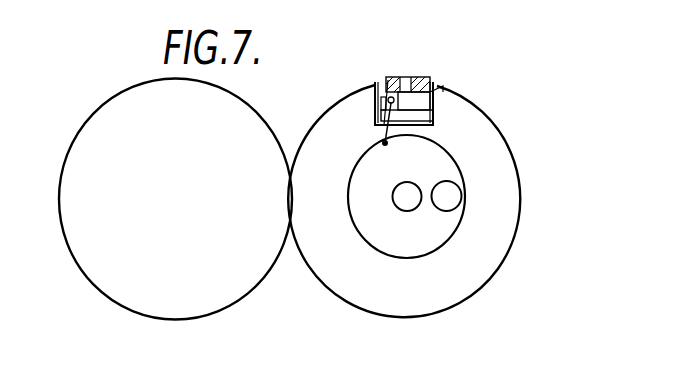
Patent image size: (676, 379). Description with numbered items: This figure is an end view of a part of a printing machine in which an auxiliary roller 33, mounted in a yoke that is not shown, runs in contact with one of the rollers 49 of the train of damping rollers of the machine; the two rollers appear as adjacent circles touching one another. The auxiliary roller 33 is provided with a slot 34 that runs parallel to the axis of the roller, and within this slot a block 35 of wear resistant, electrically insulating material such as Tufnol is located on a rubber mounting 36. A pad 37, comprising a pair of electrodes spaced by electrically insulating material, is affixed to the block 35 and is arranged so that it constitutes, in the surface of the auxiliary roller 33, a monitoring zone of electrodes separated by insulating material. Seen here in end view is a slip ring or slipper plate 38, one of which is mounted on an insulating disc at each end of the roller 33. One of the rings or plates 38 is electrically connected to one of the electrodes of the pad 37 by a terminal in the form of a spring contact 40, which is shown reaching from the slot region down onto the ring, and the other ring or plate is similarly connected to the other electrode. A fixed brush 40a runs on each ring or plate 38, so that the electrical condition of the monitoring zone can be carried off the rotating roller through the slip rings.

The auxiliary roller 33 is at (505, 227).
The slot 34 is at (433, 98).
The block 35 is at (439, 90).
The rubber mounting 36 is at (433, 116).
The pad 37 is at (420, 70).
The slip ring or slipper plate 38 is at (437, 163).
The spring contact 40 is at (391, 101).
The fixed brush 40a is at (452, 198).
The damping roller 49 is at (95, 257).